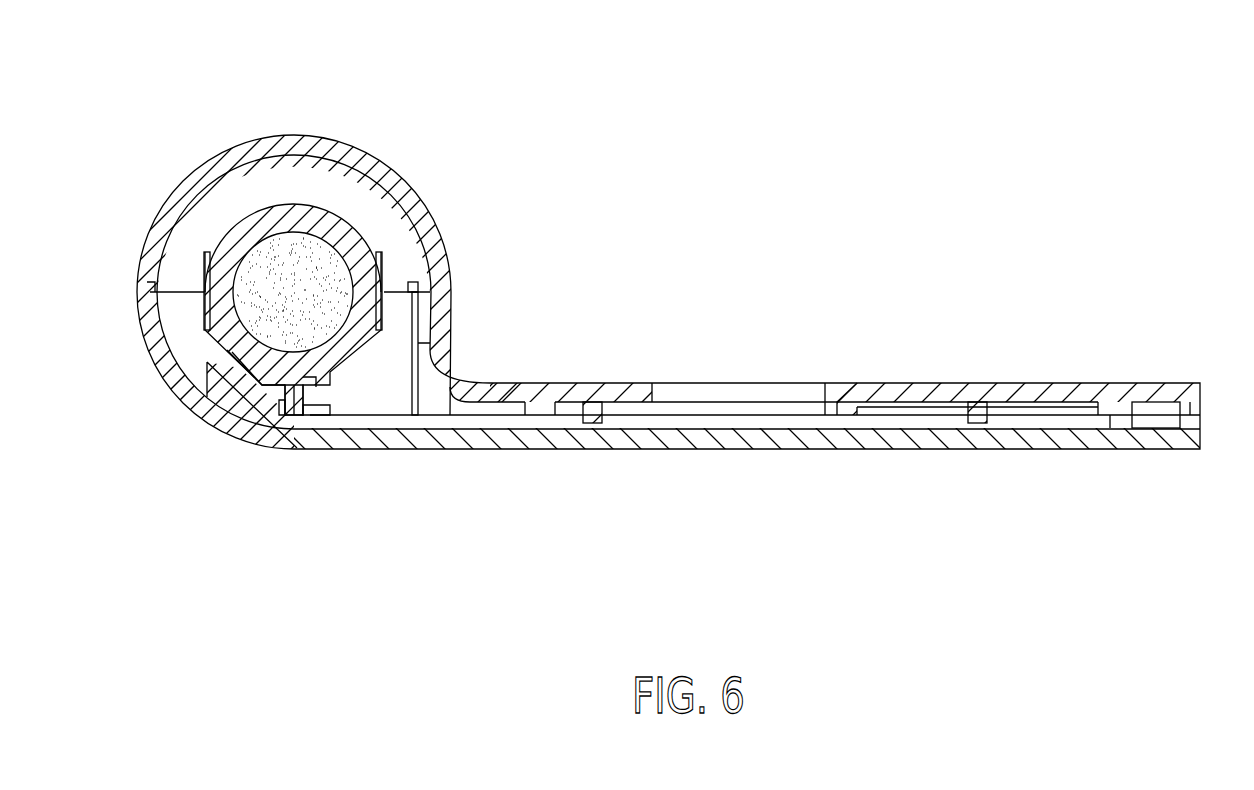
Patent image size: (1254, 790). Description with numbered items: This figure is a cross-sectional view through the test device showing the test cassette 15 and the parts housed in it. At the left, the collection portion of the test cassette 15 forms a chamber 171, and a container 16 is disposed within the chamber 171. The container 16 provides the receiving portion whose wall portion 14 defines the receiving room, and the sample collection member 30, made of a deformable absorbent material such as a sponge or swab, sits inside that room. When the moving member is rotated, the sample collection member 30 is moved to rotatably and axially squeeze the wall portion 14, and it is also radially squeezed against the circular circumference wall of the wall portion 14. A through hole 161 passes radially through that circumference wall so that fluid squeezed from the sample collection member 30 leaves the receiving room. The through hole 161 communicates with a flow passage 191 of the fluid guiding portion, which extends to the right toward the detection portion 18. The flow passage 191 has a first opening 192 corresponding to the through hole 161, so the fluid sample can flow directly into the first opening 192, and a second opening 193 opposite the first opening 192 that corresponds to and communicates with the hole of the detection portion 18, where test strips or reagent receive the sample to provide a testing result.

The wall portion 14 is at (233, 383).
The test cassette 15 is at (380, 170).
The container 16 is at (250, 225).
The detection portion 18 is at (850, 383).
The sample collection member 30 is at (300, 248).
The through hole 161 is at (267, 385).
The chamber 171 is at (412, 255).
The flow passage 191 is at (300, 407).
The first opening 192 is at (290, 412).
The second opening 193 is at (322, 420).